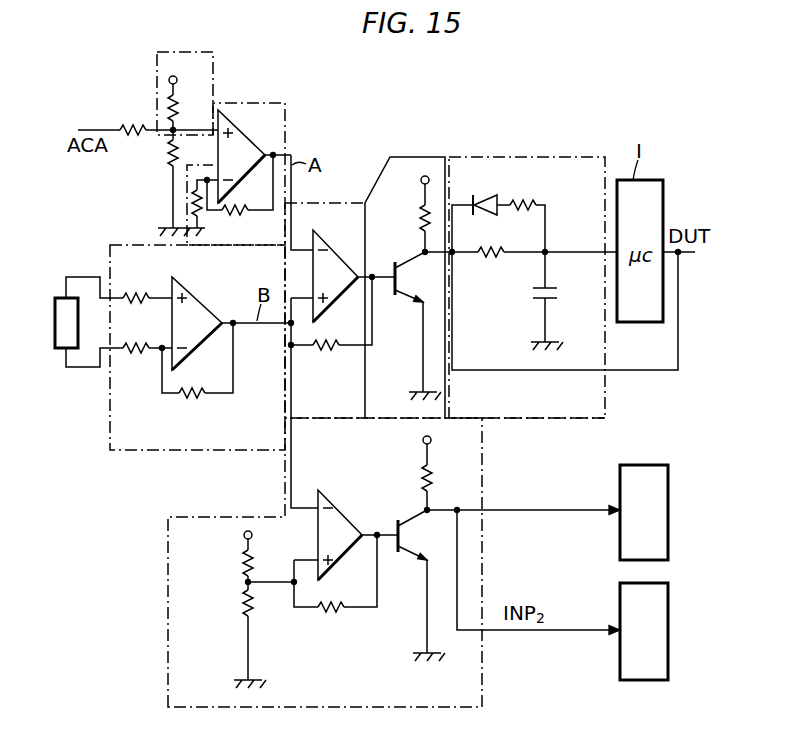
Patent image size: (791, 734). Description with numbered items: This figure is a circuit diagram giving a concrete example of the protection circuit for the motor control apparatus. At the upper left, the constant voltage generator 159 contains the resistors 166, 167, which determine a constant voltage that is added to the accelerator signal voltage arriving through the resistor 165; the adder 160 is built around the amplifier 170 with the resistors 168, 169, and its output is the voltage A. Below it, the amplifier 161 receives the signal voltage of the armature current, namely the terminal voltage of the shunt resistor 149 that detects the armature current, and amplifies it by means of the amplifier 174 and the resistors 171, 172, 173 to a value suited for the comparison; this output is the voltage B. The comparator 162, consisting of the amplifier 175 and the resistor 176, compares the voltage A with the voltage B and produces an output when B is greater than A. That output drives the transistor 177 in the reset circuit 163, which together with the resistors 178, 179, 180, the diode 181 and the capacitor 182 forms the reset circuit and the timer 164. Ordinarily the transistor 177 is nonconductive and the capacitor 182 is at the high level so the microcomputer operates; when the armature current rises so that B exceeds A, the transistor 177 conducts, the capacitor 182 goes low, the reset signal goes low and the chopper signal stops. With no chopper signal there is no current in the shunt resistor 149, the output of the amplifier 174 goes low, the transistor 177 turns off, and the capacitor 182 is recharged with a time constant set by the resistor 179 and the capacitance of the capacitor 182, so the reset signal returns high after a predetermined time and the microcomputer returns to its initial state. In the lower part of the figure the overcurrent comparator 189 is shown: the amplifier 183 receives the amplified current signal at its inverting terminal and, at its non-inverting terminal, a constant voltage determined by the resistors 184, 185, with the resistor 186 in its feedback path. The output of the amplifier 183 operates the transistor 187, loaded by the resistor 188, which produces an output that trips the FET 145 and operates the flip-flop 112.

The flip-flop 112 is at (668, 598).
The FET 145 is at (668, 485).
The shunt resistor 149 is at (53, 330).
The constant voltage generator 159 is at (165, 52).
The adder 160 is at (243, 103).
The amplifier 161 is at (141, 452).
The comparator 162 is at (323, 203).
The reset circuit 163 is at (405, 157).
The timer 164 is at (515, 157).
The resistor 165 is at (130, 125).
The resistor 166 is at (176, 116).
The resistor 167 is at (168, 158).
The resistor 168 is at (192, 216).
The resistor 169 is at (230, 216).
The amplifier 170 is at (246, 135).
The resistor 171 is at (135, 290).
The resistor 172 is at (136, 356).
The resistor 173 is at (195, 405).
The amplifier 174 is at (200, 302).
The amplifier 175 is at (338, 256).
The resistor 176 is at (330, 352).
The transistor 177 is at (408, 296).
The resistor 178 is at (419, 218).
The resistor 179 is at (492, 260).
The resistor 180 is at (513, 200).
The diode 181 is at (492, 194).
The capacitor 182 is at (558, 293).
The amplifier 183 is at (343, 514).
The resistor 184 is at (241, 555).
The resistor 185 is at (241, 602).
The resistor 186 is at (345, 612).
The transistor 187 is at (410, 556).
The resistor 188 is at (421, 482).
The comparator 189 is at (483, 463).